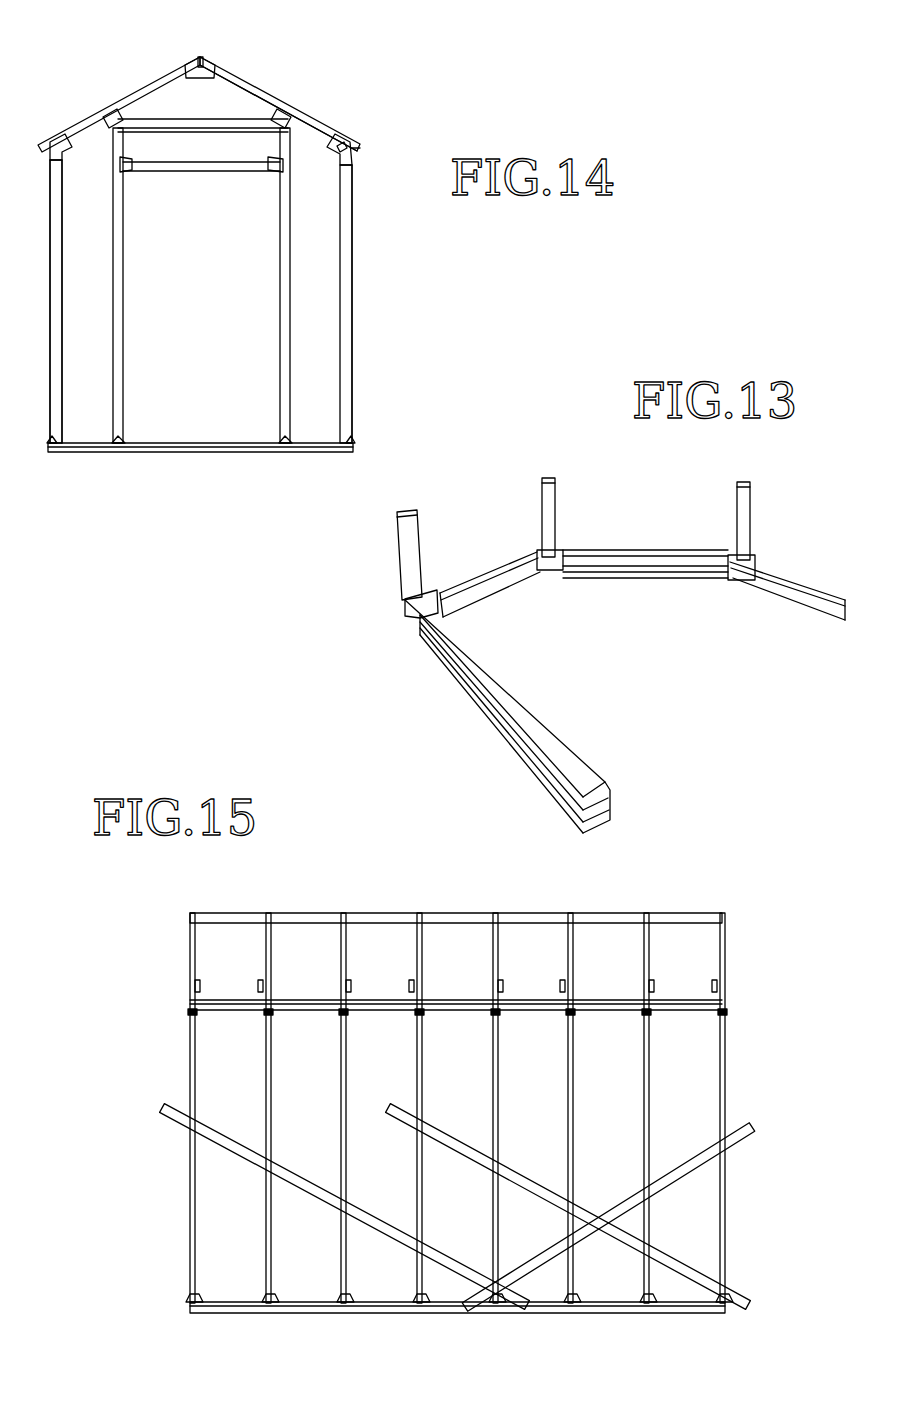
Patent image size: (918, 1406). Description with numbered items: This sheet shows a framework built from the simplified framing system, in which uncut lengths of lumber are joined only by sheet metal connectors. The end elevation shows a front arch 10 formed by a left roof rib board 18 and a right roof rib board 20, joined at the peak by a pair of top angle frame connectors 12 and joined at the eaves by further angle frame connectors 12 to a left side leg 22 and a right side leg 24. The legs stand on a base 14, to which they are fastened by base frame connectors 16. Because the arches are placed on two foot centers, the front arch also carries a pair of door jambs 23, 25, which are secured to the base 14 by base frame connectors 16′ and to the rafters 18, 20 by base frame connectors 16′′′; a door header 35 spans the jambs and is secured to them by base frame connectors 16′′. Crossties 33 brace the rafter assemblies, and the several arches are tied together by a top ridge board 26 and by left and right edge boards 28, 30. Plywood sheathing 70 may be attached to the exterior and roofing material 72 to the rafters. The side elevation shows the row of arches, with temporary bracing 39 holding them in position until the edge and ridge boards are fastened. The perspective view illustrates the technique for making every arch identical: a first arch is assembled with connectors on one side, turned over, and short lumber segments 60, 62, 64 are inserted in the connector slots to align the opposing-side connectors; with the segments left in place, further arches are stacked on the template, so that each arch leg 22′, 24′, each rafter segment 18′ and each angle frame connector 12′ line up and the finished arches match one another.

In FIG. 14, the arch 10 is at (288, 122).
In FIG. 14, the angle frame connector 12 is at (214, 66).
In FIG. 15, the angle frame connector 12 is at (262, 915).
In FIG. 13, the angle frame connector 12′ is at (410, 605).
In FIG. 14, the base 14 is at (332, 430).
In FIG. 15, the base 14 is at (225, 1290).
In FIG. 14, the base frame connector 16 is at (52, 452).
In FIG. 15, the base frame connector 16 is at (190, 1300).
In FIG. 14, the base frame connector 16′ is at (120, 452).
In FIG. 14, the base frame connector 16′′ is at (278, 172).
In FIG. 14, the base frame connector 16′′′ is at (275, 117).
In FIG. 14, the left roof rib board 18 is at (143, 82).
In FIG. 13, the rafter segment 18′ is at (478, 580).
In FIG. 14, the right roof rib board 20 is at (270, 95).
In FIG. 13, the right roof rib board 20 is at (660, 550).
In FIG. 14, the left side leg 22 is at (48, 290).
In FIG. 13, the arch leg 22′ is at (520, 757).
In FIG. 14, the door jamb 23 is at (125, 312).
In FIG. 14, the right side leg 24 is at (355, 268).
In FIG. 13, the arch leg 24′ is at (815, 590).
In FIG. 14, the door jamb 25 is at (278, 330).
In FIG. 14, the top ridge board 26 is at (202, 57).
In FIG. 15, the top ridge board 26 is at (217, 917).
In FIG. 14, the left edge board 28 is at (72, 162).
In FIG. 14, the right edge board 30 is at (352, 150).
In FIG. 15, the right edge board 30 is at (210, 1005).
In FIG. 14, the crosstie 33 is at (285, 112).
In FIG. 15, the crosstie 33 is at (257, 985).
In FIG. 14, the door header 35 is at (285, 172).
In FIG. 15, the temporary bracing 39 is at (160, 1108).
In FIG. 13, the short lumber segment 60 is at (412, 540).
In FIG. 13, the short lumber segment 62 is at (553, 500).
In FIG. 13, the short lumber segment 64 is at (752, 495).
In FIG. 14, the plywood sheathing 70 is at (355, 380).
In FIG. 14, the roofing material 72 is at (44, 152).